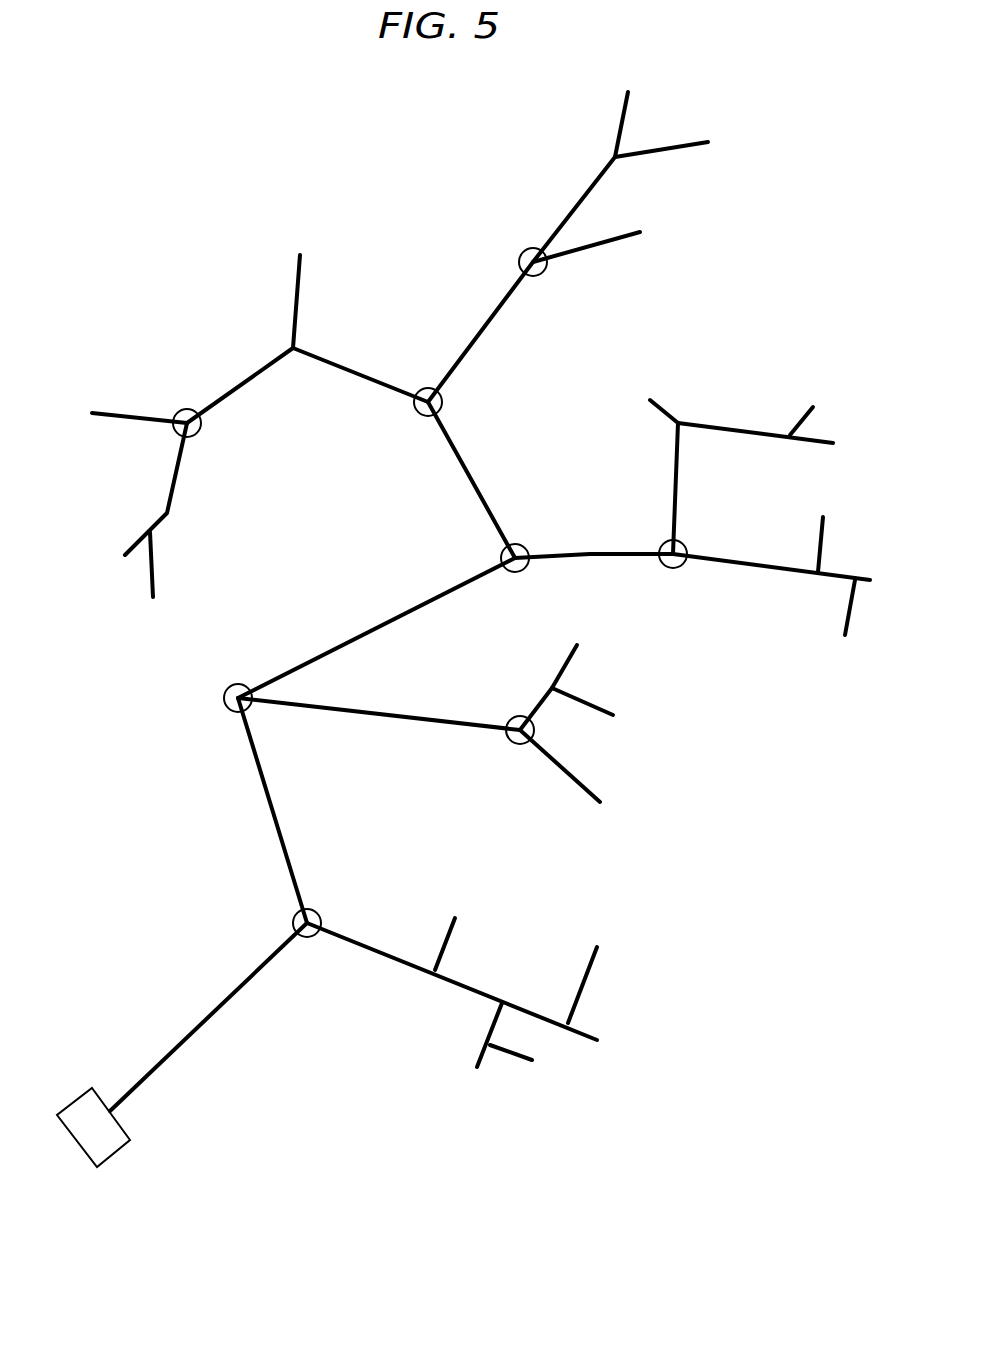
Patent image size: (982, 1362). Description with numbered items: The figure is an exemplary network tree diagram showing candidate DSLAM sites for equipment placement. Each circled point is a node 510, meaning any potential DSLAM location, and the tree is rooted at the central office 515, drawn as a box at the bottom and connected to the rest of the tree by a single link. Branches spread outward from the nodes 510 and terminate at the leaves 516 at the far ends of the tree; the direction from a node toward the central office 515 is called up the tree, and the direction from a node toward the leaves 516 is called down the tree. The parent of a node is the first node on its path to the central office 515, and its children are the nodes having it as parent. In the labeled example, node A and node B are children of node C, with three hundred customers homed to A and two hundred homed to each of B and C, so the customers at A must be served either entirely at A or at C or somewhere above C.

The node 510 is at (421, 615).
The central office 515 is at (113, 1157).
The leaves 516 is at (659, 147).
The node A is at (520, 257).
The node B is at (187, 409).
The node C is at (442, 405).